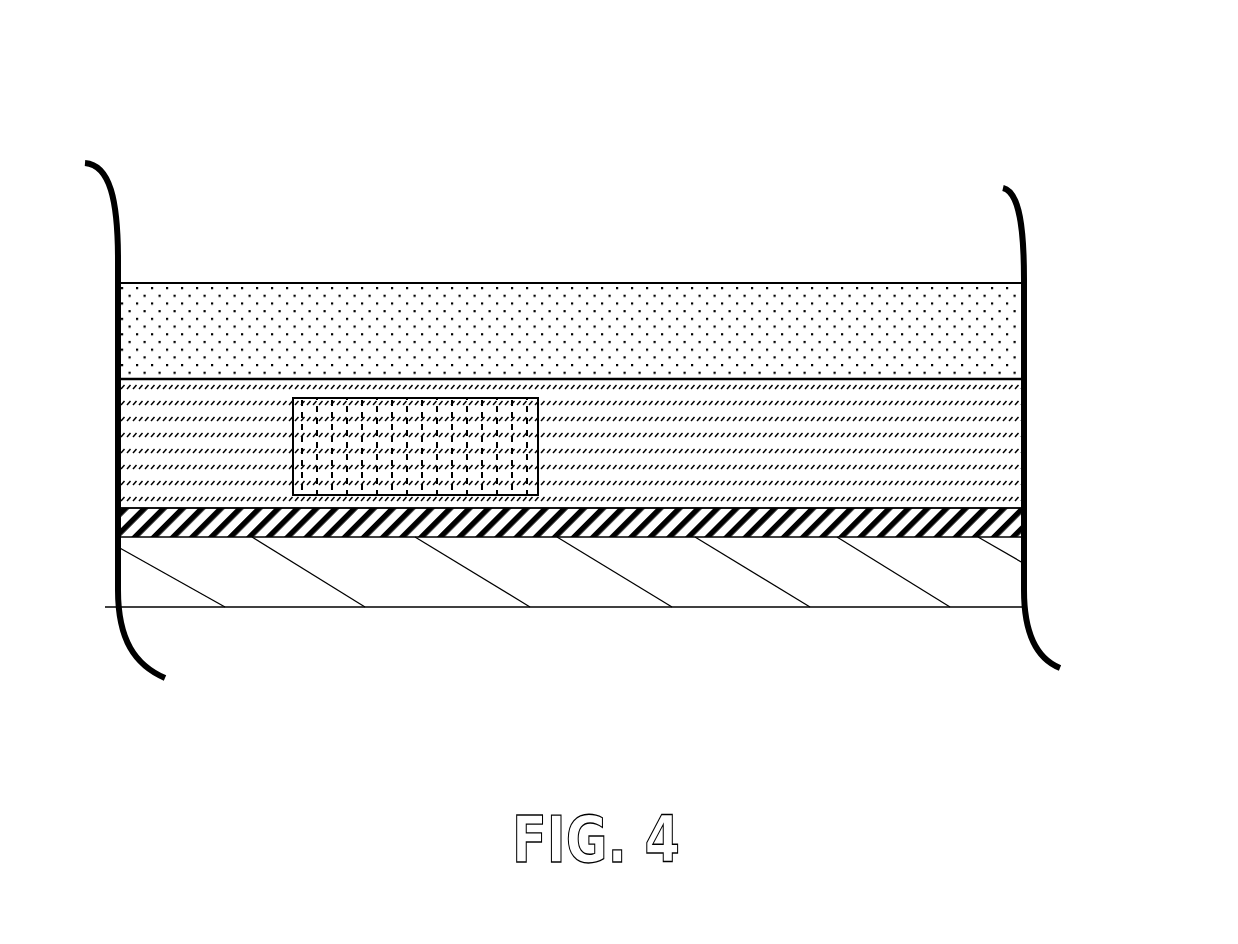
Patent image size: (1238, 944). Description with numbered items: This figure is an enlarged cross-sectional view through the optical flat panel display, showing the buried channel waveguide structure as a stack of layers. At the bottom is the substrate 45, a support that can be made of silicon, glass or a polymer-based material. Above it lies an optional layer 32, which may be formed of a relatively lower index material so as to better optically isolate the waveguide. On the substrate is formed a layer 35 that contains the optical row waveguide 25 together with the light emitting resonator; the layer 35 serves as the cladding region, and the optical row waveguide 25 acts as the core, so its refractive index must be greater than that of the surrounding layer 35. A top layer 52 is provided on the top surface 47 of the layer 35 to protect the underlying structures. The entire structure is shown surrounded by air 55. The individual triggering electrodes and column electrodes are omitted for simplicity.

The air 55 is at (521, 196).
The top layer 52 is at (348, 330).
The top surface 47 is at (245, 364).
The layer 35 is at (658, 463).
The optical row waveguide 25 is at (483, 455).
The optional layer 32 is at (272, 537).
The substrate 45 is at (977, 560).